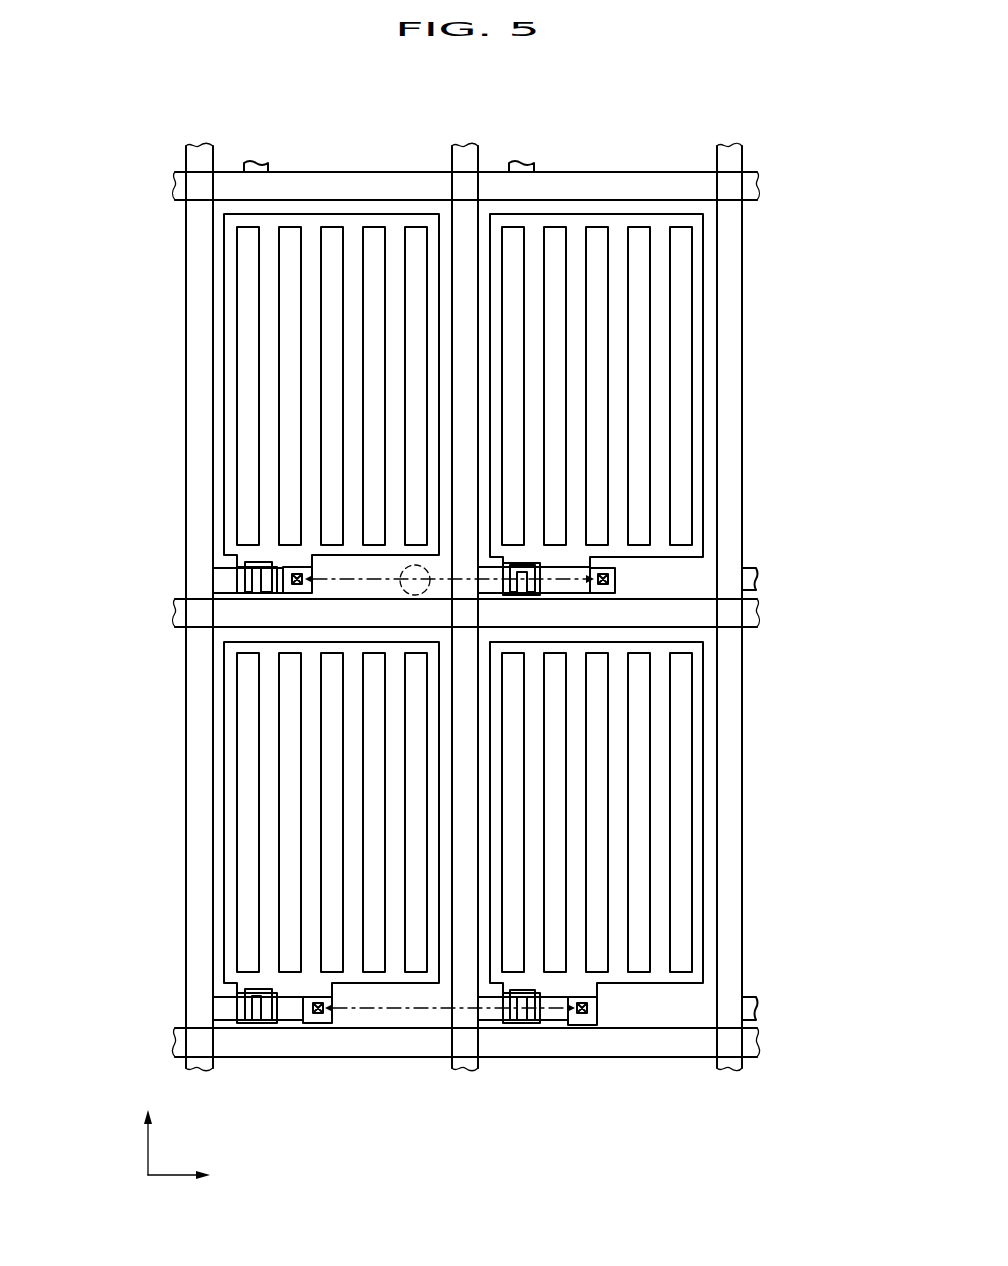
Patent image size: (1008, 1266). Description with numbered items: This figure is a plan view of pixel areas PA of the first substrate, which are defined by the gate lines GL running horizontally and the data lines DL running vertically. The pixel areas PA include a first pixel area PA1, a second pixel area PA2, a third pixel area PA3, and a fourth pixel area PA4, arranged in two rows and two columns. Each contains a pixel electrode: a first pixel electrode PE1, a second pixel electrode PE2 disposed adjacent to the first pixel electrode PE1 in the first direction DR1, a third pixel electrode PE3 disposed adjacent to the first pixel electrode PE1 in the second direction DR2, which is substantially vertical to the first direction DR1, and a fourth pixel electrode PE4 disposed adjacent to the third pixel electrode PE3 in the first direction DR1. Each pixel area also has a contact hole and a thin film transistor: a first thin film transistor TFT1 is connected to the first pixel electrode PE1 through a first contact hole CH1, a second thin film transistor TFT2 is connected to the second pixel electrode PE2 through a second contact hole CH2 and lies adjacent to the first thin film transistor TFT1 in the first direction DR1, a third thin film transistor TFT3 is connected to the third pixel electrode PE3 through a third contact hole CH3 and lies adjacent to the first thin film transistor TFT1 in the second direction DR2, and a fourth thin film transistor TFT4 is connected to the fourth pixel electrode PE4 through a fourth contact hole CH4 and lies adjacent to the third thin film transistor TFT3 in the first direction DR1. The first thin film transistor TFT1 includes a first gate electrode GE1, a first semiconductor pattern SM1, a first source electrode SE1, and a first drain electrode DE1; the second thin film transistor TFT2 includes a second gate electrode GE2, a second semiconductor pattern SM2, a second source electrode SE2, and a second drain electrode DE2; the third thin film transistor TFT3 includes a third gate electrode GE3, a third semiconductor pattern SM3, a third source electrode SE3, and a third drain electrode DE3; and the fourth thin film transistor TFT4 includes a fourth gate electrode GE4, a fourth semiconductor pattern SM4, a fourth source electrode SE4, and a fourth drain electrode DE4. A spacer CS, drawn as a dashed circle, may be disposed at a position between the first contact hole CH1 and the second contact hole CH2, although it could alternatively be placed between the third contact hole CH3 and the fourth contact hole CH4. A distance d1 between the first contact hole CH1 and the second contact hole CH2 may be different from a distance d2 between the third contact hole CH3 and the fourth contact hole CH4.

The pixel area PA is at (682, 155).
The first pixel area PA1 is at (362, 206).
The second pixel area PA2 is at (622, 206).
The third pixel area PA3 is at (330, 638).
The fourth pixel area PA4 is at (620, 638).
The gate line GL is at (752, 186).
The data line DL is at (742, 753).
The first pixel electrode PE1 is at (215, 366).
The second pixel electrode PE2 is at (712, 366).
The third pixel electrode PE3 is at (215, 798).
The fourth pixel electrode PE4 is at (712, 798).
The first thin film transistor TFT1 is at (107, 523).
The second thin film transistor TFT2 is at (828, 453).
The third thin film transistor TFT3 is at (107, 953).
The fourth thin film transistor TFT4 is at (828, 878).
The first semiconductor pattern SM1 is at (236, 566).
The second semiconductor pattern SM2 is at (497, 568).
The third semiconductor pattern SM3 is at (240, 993).
The fourth semiconductor pattern SM4 is at (497, 996).
The first source electrode SE1 is at (245, 563).
The second source electrode SE2 is at (538, 565).
The third source electrode SE3 is at (245, 990).
The fourth source electrode SE4 is at (538, 993).
The first gate electrode GE1 is at (228, 598).
The second gate electrode GE2 is at (558, 568).
The third gate electrode GE3 is at (228, 1022).
The fourth gate electrode GE4 is at (558, 998).
The first drain electrode DE1 is at (283, 594).
The second drain electrode DE2 is at (520, 565).
The third drain electrode DE3 is at (301, 1022).
The fourth drain electrode DE4 is at (520, 993).
The first contact hole CH1 is at (296, 567).
The second contact hole CH2 is at (604, 594).
The third contact hole CH3 is at (318, 1023).
The fourth contact hole CH4 is at (587, 1025).
The spacer CS is at (407, 565).
The distance between the first contact hole and the second contact hole d1 is at (449, 570).
The distance between the third contact hole and the fourth contact hole d2 is at (450, 999).
The first direction DR1 is at (198, 1176).
The second direction DR2 is at (147, 1129).